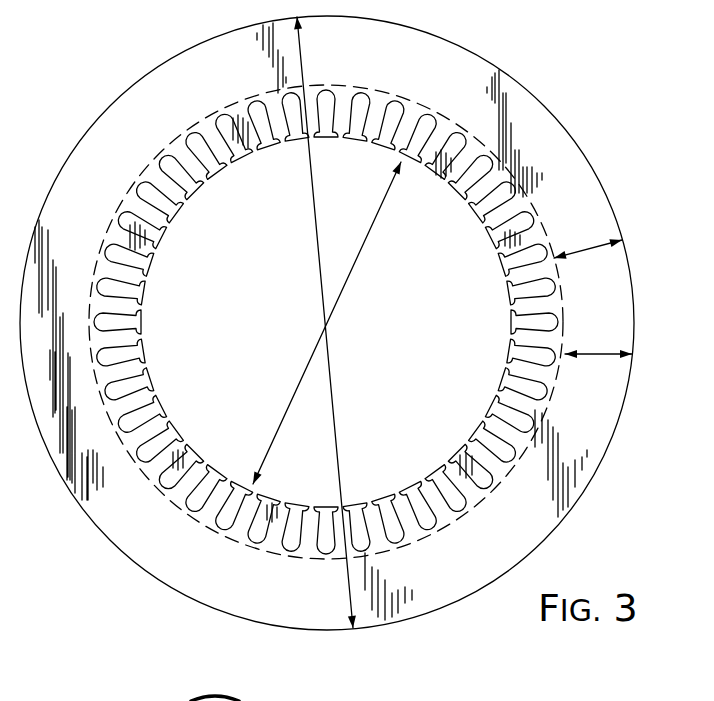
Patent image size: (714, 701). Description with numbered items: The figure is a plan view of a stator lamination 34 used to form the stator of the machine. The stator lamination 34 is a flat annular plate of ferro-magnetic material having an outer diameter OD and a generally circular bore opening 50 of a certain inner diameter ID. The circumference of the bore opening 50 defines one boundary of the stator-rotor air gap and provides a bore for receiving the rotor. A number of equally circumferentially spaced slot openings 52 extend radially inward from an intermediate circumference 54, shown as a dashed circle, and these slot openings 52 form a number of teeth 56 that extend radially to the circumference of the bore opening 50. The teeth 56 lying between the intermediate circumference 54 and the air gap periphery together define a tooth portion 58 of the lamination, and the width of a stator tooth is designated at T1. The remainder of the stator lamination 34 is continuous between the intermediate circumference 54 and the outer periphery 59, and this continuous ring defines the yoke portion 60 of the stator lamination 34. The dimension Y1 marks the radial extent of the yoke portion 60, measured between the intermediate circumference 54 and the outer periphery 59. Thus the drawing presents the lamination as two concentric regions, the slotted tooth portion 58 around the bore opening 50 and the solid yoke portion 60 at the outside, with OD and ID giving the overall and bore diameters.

The stator lamination 34 is at (519, 97).
The bore opening 50 is at (509, 283).
The slot openings 52 is at (394, 124).
The intermediate circumference 54 is at (563, 299).
The teeth 56 is at (127, 340).
The tooth portion 58 is at (311, 555).
The outer periphery 59 is at (436, 37).
The yoke portion 60 is at (600, 245).
The stator tooth width T1 is at (422, 517).
The yoke dimension Y1 is at (590, 357).
The outer diameter OD is at (314, 232).
The inner diameter ID is at (372, 225).